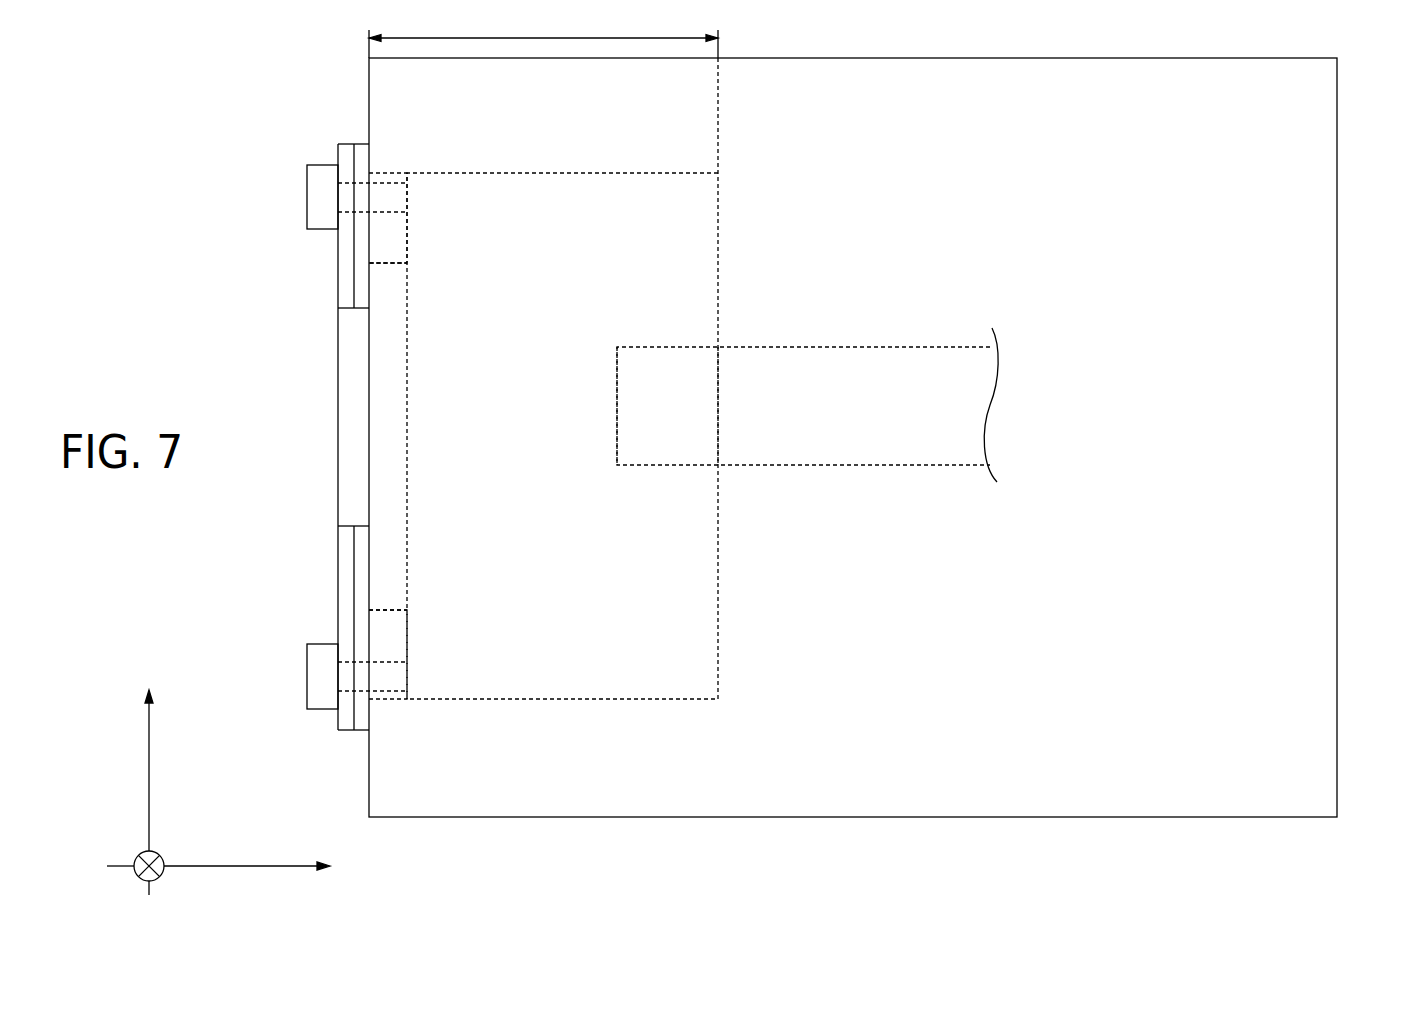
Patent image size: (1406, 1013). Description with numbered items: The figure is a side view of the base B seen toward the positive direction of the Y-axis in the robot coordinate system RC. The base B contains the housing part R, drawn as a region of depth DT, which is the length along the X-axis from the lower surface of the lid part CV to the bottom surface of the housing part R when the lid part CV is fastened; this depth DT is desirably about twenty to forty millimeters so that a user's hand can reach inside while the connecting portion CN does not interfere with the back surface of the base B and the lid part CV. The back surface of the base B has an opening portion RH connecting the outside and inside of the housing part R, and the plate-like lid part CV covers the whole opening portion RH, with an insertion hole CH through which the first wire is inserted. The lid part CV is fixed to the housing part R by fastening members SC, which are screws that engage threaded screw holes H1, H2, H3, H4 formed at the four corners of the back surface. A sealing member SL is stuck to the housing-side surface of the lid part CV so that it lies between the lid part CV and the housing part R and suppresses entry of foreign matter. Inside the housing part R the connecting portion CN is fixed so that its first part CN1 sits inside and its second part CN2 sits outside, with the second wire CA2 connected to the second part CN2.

The base B is at (1340, 175).
The depth DT is at (543, 32).
The housing part R is at (720, 245).
The screw hole H1 is at (383, 182).
The screw hole H2 is at (383, 182).
The screw hole H3 is at (383, 693).
The screw hole H4 is at (402, 722).
The fastening member SC is at (307, 194).
The lid part CV is at (338, 285).
The sealing member SL is at (372, 295).
The insertion hole CH is at (327, 377).
The opening portion RH is at (395, 433).
The connecting portion CN is at (650, 345).
The first part CN1 is at (617, 413).
The second part CN2 is at (725, 405).
The second wire CA2 is at (875, 465).
The robot coordinate system RC is at (165, 852).